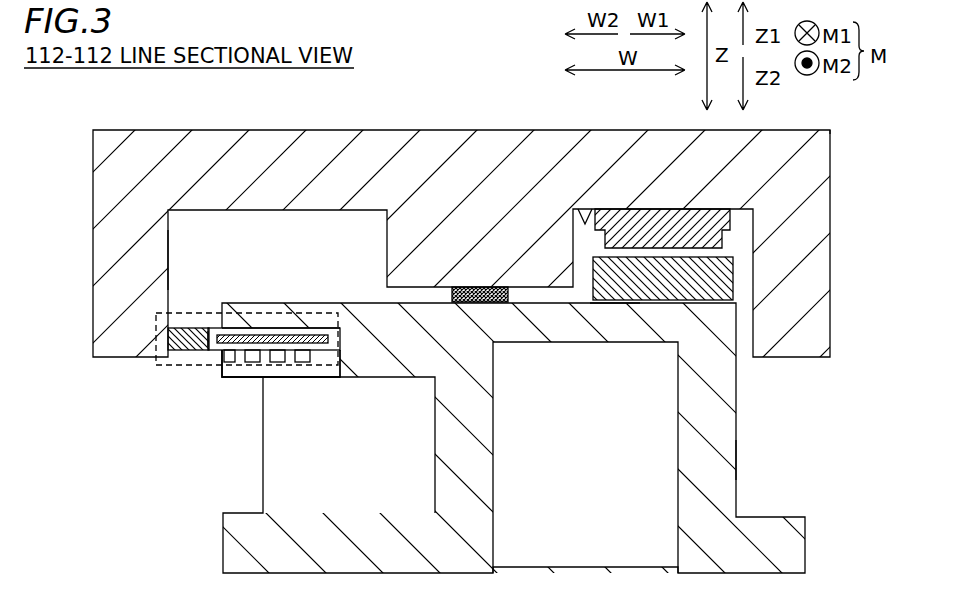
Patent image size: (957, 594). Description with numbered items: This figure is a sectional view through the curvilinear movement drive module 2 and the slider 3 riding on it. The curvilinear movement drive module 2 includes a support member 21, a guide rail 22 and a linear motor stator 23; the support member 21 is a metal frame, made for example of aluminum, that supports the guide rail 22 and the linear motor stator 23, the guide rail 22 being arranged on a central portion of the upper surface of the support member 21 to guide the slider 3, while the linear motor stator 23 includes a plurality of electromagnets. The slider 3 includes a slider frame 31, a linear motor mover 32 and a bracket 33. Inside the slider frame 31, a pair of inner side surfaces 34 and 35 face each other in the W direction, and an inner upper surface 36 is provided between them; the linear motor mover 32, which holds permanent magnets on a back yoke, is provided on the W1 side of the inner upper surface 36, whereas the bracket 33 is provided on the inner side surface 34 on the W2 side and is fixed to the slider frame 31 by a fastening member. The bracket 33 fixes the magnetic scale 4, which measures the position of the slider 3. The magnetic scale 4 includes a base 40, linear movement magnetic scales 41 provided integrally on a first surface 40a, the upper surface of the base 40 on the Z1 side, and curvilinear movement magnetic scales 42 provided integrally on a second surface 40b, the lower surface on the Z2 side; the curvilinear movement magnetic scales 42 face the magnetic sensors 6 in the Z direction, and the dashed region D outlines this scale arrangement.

The curvilinear movement drive module 2 is at (743, 424).
The support member 21 is at (738, 462).
The guide rail 22 is at (484, 304).
The linear motor stator 23 is at (606, 303).
The slider 3 is at (394, 126).
The slider frame 31 is at (833, 131).
The linear motor mover 32 is at (733, 229).
The bracket 33 is at (176, 352).
The inner side surface 34 is at (182, 256).
The inner side surface 35 is at (742, 274).
The inner upper surface 36 is at (586, 208).
The magnetic scale 4 is at (219, 353).
The base 40 is at (215, 327).
The first surface 40a is at (230, 334).
The second surface 40b is at (224, 354).
The linear movement magnetic scales 41 is at (312, 338).
The curvilinear movement magnetic scales 42 is at (310, 352).
The magnetic sensors 6 is at (302, 363).
The region D is at (162, 367).